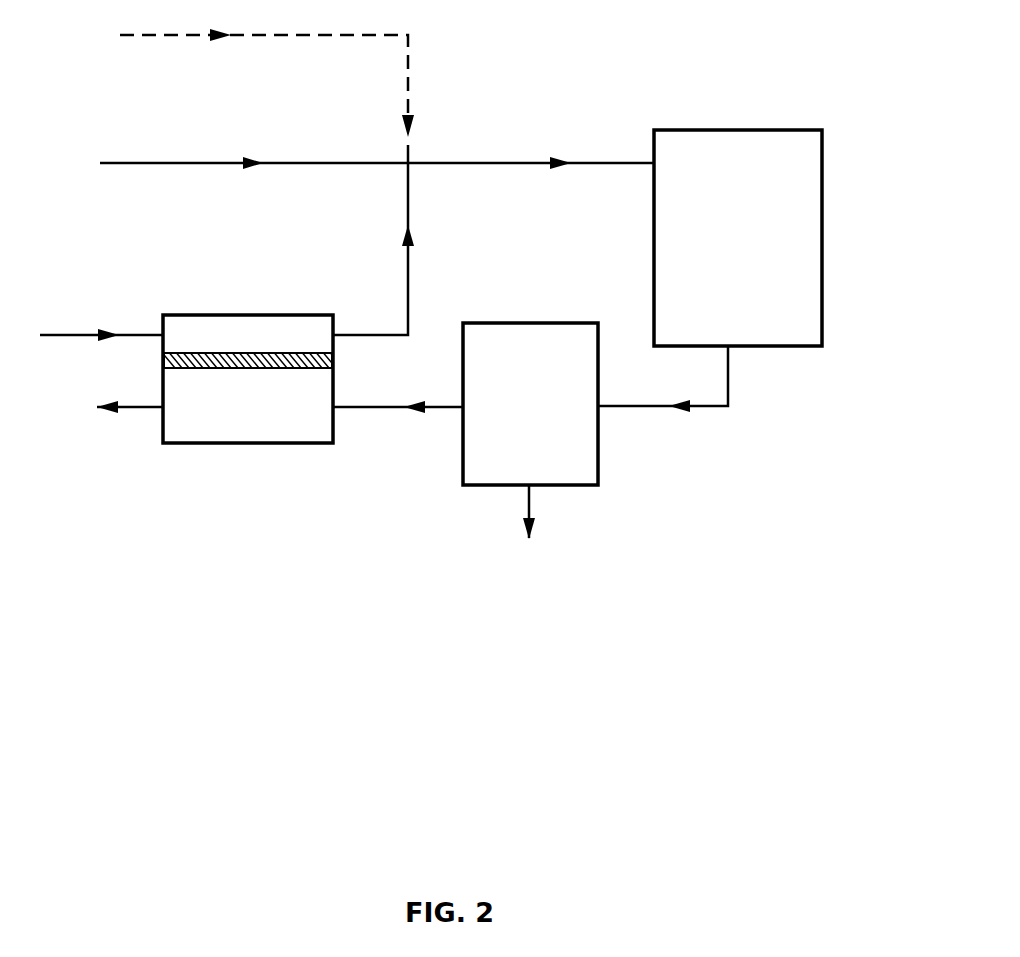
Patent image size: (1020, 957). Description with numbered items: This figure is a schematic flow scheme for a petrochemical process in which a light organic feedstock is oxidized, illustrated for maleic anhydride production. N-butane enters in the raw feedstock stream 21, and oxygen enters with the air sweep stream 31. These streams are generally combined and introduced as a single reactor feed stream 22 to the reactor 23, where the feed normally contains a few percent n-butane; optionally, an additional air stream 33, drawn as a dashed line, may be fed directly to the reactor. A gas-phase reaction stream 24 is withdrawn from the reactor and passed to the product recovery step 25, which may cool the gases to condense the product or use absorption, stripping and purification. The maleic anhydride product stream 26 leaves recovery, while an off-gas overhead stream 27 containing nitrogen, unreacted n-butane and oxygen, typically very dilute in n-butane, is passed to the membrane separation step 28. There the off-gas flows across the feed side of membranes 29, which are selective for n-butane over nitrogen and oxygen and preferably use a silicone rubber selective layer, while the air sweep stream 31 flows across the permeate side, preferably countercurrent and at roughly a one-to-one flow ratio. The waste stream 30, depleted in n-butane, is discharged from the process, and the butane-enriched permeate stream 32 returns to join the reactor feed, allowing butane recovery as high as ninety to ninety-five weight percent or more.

The raw feedstock stream 21 is at (254, 150).
The reactor feed stream 22 is at (531, 149).
The reactor 23 is at (822, 195).
The reaction stream 24 is at (663, 379).
The product recovery step 25 is at (598, 455).
The maleic anhydride product stream 26 is at (549, 518).
The overhead stream 27 is at (398, 421).
The membrane separation step 28 is at (272, 443).
The membranes 29 is at (333, 357).
The waste stream 30 is at (109, 406).
The air sweep stream 31 is at (101, 322).
The permeate stream 32 is at (396, 240).
The additional air stream 33 is at (267, 69).